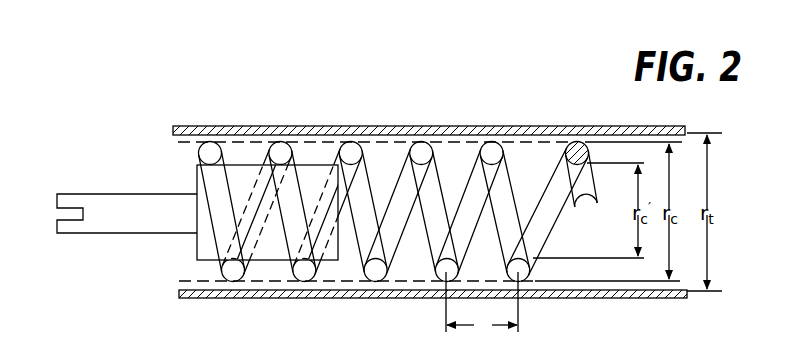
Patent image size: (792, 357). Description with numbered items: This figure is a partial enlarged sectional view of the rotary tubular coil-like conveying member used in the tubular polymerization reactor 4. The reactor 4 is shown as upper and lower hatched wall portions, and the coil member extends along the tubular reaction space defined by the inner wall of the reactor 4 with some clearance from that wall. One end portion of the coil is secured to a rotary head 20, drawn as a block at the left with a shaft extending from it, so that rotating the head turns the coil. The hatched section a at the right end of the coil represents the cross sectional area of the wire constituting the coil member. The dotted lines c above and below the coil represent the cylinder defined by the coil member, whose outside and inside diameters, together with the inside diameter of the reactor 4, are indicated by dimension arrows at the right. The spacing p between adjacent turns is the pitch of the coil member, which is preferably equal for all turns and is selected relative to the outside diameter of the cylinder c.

The rotary head 20 is at (240, 165).
The tubular polymerization reactor 4 is at (358, 132).
The cylinder defined by the coil member c is at (462, 141).
The cross sectional area of the wire a is at (576, 143).
The pitch p is at (482, 305).